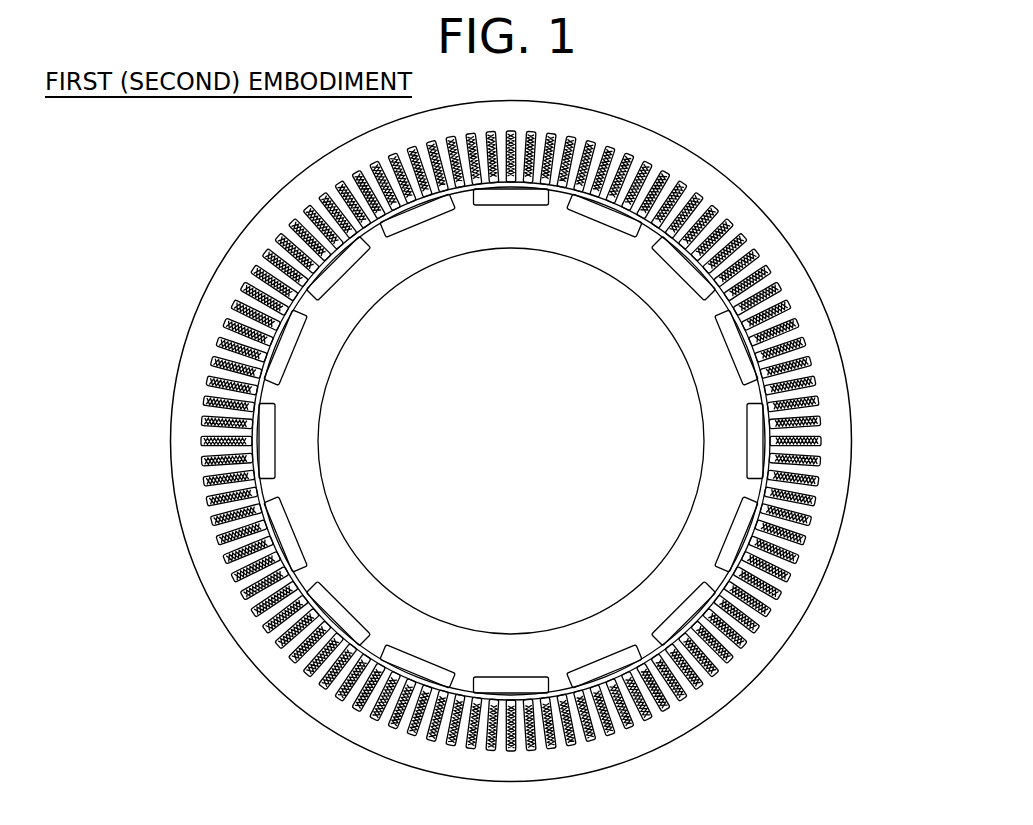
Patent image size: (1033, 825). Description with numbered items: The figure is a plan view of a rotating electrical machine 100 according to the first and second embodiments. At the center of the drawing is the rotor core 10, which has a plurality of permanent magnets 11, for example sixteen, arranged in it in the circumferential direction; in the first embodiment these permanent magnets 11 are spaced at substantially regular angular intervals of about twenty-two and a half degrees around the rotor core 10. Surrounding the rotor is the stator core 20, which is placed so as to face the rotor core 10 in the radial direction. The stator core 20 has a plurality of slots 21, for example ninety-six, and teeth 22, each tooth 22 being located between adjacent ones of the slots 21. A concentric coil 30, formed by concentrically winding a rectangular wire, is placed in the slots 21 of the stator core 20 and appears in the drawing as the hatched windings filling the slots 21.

The rotating electrical machine 100 is at (793, 157).
The rotor core 10 is at (600, 255).
The permanent magnet 11 is at (685, 270).
The stator core 20 is at (793, 275).
The slot 21 is at (783, 308).
The tooth 22 is at (785, 334).
The concentric coil 30 is at (823, 420).